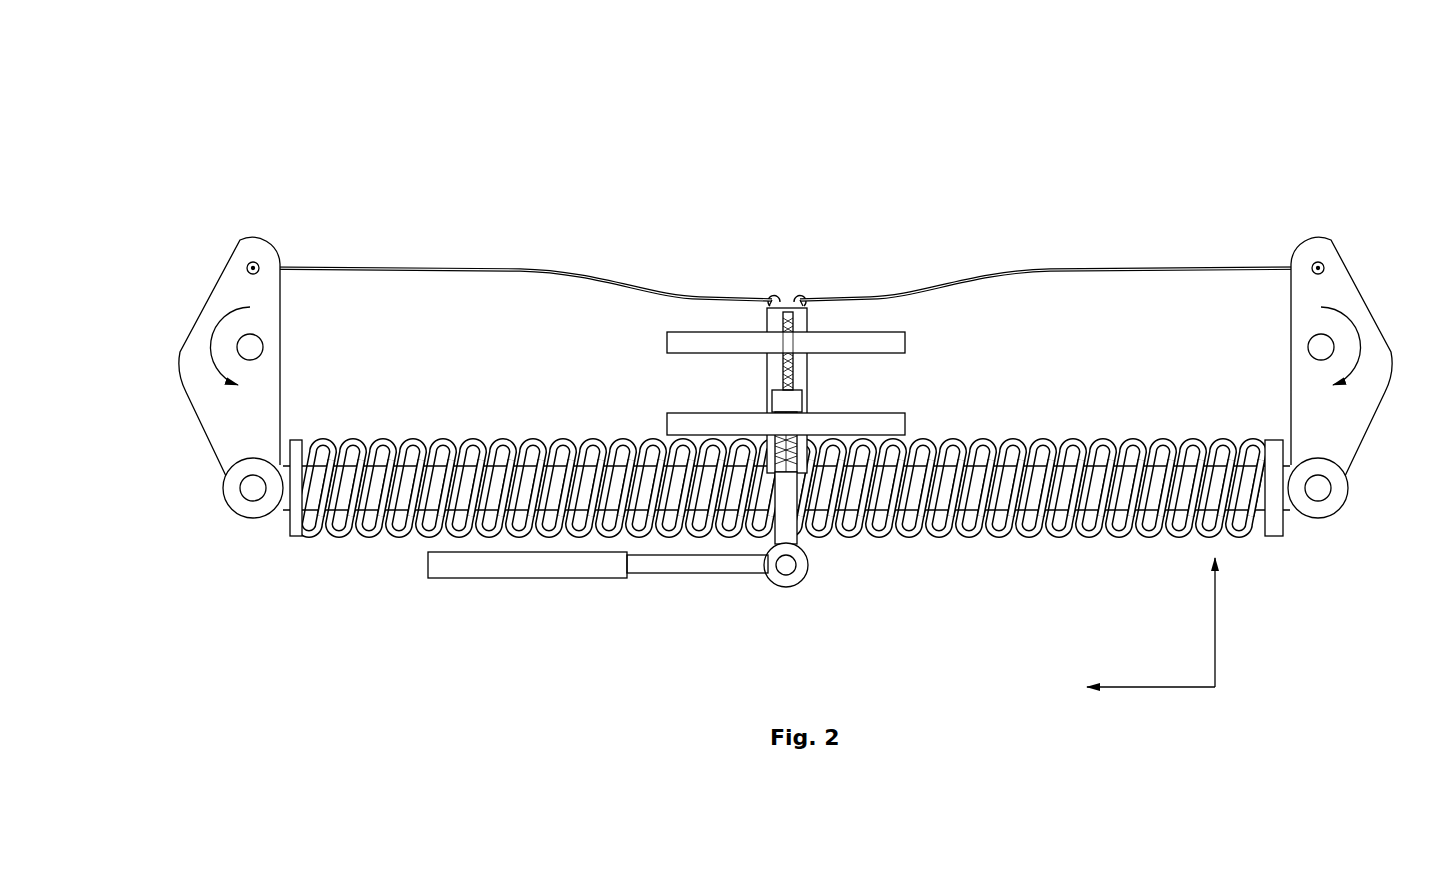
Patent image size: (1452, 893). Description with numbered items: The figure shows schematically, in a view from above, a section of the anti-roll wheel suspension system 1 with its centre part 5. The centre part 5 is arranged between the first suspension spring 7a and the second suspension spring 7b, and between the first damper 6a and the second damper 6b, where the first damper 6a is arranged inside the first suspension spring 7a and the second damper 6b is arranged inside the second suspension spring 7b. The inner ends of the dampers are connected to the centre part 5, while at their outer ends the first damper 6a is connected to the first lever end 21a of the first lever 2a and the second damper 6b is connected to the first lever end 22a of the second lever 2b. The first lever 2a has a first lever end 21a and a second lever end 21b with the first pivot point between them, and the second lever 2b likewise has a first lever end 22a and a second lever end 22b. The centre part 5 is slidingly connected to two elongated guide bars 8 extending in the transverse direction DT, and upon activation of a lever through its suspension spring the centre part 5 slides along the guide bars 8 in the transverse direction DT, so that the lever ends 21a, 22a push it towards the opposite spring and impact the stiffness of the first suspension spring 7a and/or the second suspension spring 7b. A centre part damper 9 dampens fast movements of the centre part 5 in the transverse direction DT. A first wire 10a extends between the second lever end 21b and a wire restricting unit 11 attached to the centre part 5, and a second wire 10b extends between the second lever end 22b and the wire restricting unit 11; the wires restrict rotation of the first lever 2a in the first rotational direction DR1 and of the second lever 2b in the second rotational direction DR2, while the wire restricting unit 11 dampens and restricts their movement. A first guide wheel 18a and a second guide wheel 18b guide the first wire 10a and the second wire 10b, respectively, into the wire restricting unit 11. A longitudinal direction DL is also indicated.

The anti-roll wheel suspension system 1 is at (915, 102).
The first lever 2a is at (1317, 240).
The second lever 2b is at (258, 240).
The centre part 5 is at (735, 283).
The first damper 6a is at (1040, 500).
The second damper 6b is at (385, 500).
The first suspension spring 7a is at (1092, 520).
The second suspension spring 7b is at (335, 525).
The elongated guide bar 8 is at (888, 345).
The centre part damper 9 is at (690, 565).
The first wire 10a is at (1065, 268).
The second wire 10b is at (500, 268).
The wire restricting unit 11 is at (668, 377).
The first guide wheel 18a is at (800, 300).
The second guide wheel 18b is at (772, 300).
The first lever end 21a is at (1332, 530).
The second lever end 21b is at (1357, 245).
The first lever end 22a is at (237, 530).
The second lever end 22b is at (215, 245).
The first rotational direction DR1 is at (1376, 311).
The second rotational direction DR2 is at (200, 311).
The longitudinal direction DL is at (1234, 622).
The transverse direction DT is at (1150, 706).